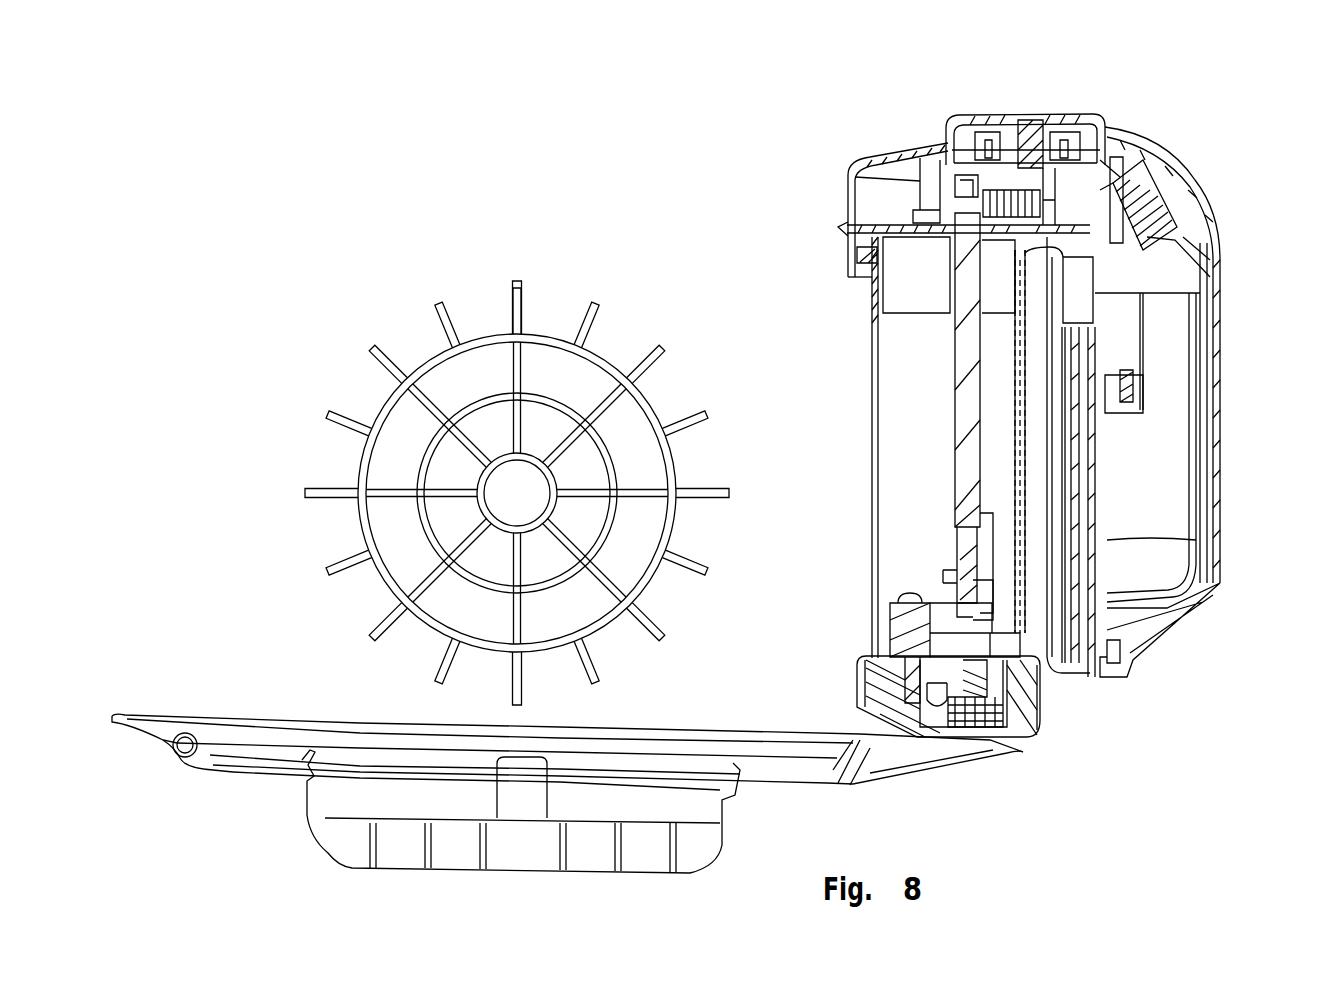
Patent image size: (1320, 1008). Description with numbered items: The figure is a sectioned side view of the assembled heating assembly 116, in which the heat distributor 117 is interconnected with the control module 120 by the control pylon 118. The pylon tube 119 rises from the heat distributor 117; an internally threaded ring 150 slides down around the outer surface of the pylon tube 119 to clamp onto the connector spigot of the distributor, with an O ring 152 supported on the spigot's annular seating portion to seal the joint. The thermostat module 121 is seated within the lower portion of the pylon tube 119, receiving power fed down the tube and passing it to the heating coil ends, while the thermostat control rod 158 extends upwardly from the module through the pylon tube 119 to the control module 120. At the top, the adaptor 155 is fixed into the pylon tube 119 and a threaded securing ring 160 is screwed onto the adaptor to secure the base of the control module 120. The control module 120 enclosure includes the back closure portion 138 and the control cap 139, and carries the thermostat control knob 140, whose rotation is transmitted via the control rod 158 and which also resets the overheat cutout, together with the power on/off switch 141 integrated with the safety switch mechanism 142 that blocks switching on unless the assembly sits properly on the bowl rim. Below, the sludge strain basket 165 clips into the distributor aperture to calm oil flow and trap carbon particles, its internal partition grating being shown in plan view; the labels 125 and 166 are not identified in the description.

The heating assembly 116 is at (223, 212).
The heat distributor 117 is at (230, 673).
The control pylon 118 is at (801, 382).
The pylon tube 119 is at (872, 430).
The control module 120 is at (1199, 103).
The thermostat module 121 is at (841, 614).
The hinge pin 125 is at (170, 743).
The back closure portion 138 is at (1222, 495).
The control cap 139 is at (895, 152).
The thermostat control knob 140 is at (1010, 118).
The power on/off switch 141 is at (1202, 178).
The safety switch mechanism 142 is at (1088, 295).
The internally threaded ring 150 is at (857, 665).
The O ring 152 is at (1040, 683).
The adaptor 155 is at (858, 283).
The thermostat control rod 158 is at (960, 495).
The threaded securing ring 160 is at (845, 252).
The sludge strain basket 165 is at (284, 819).
The impeller wheel 166 is at (332, 459).